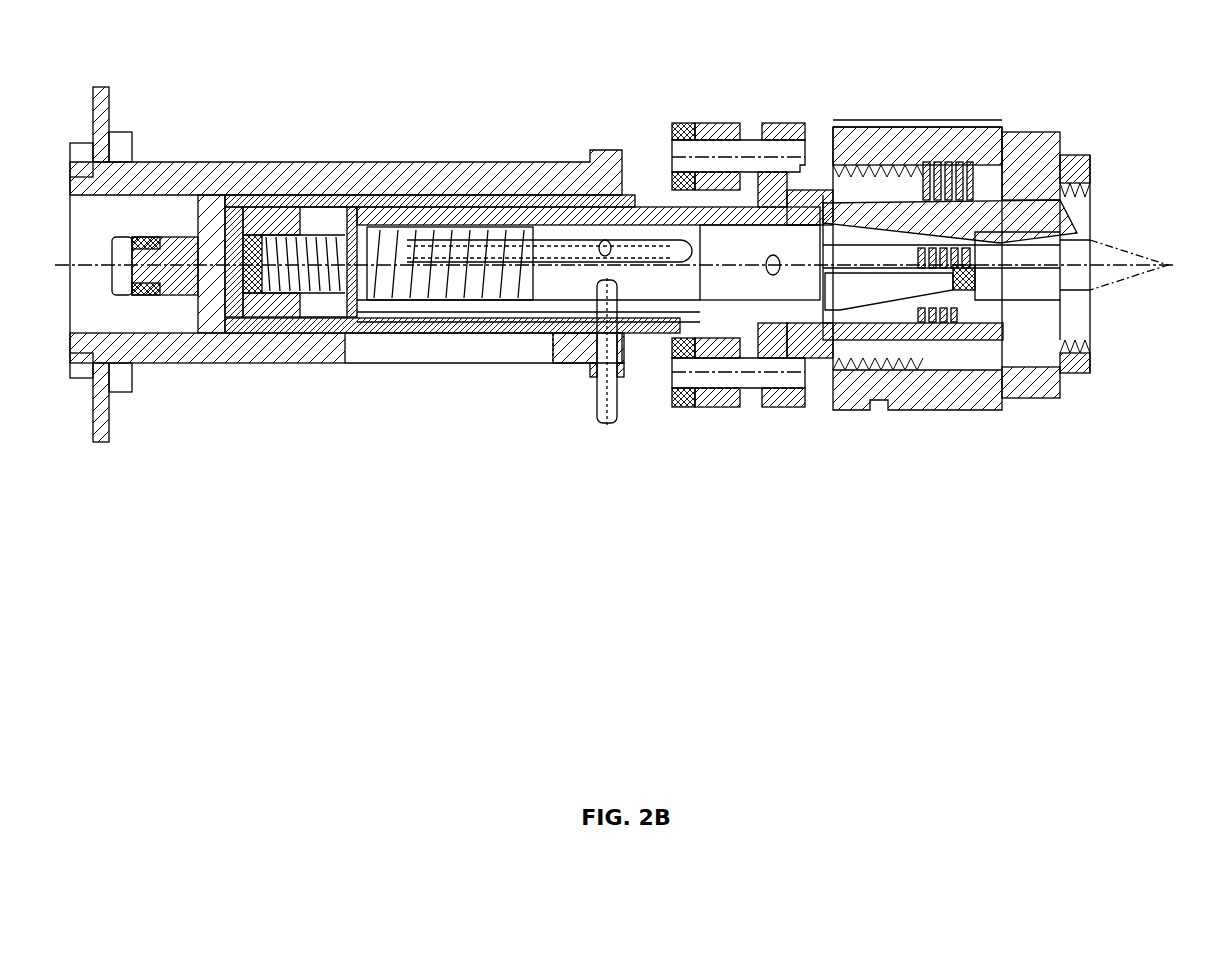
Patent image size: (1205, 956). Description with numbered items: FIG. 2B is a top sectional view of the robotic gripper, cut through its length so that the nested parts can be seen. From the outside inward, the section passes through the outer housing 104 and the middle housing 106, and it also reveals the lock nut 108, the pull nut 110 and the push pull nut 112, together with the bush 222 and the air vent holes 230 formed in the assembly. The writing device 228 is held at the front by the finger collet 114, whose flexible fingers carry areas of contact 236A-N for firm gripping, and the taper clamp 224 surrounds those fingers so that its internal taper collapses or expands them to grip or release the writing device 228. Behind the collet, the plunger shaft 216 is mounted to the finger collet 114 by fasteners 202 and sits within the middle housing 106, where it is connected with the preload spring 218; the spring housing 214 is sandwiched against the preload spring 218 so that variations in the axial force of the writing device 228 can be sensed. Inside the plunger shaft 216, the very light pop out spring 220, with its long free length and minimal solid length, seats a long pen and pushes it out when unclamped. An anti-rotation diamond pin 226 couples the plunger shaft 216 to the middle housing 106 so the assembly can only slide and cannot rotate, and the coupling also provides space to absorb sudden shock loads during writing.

The outer housing 104 is at (158, 348).
The middle housing 106 is at (263, 332).
The lock nut 108 is at (853, 397).
The pull nut 110 is at (1083, 373).
The push pull nut 112 is at (940, 400).
The finger collet 114 is at (990, 400).
The fasteners 202 is at (678, 407).
The spring housing 214 is at (287, 307).
The plunger shaft 216 is at (778, 340).
The preload spring 218 is at (318, 293).
The pop out spring 220 is at (410, 297).
The bush 222 is at (708, 182).
The taper clamp 224 is at (1025, 183).
The anti-rotation diamond pin 226 is at (683, 150).
The writing device 228 is at (1128, 277).
The air vent holes 230 is at (253, 302).
The areas of contact 236A-N is at (967, 235).